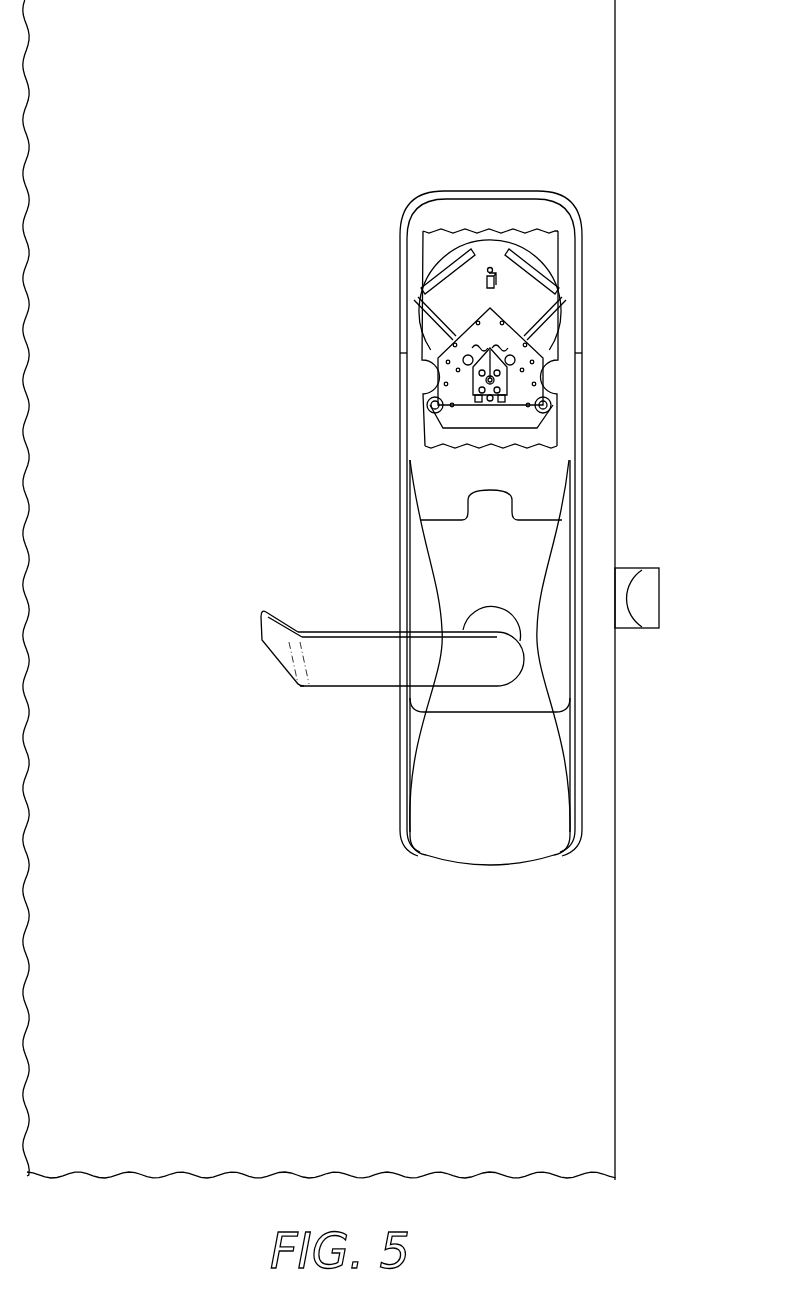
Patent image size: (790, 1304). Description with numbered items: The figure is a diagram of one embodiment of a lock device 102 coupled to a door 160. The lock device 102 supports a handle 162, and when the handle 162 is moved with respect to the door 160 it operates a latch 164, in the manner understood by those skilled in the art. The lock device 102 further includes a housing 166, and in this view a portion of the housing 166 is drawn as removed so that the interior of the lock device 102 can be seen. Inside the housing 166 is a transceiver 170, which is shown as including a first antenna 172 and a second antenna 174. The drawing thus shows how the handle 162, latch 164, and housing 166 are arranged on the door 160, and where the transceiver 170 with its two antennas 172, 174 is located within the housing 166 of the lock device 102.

The lock device 102 is at (392, 516).
The door 160 is at (420, 516).
The handle 162 is at (278, 652).
The latch 164 is at (652, 596).
The housing 166 is at (497, 838).
The transceiver 170 is at (492, 232).
The first antenna 172 is at (452, 247).
The second antenna 174 is at (526, 247).